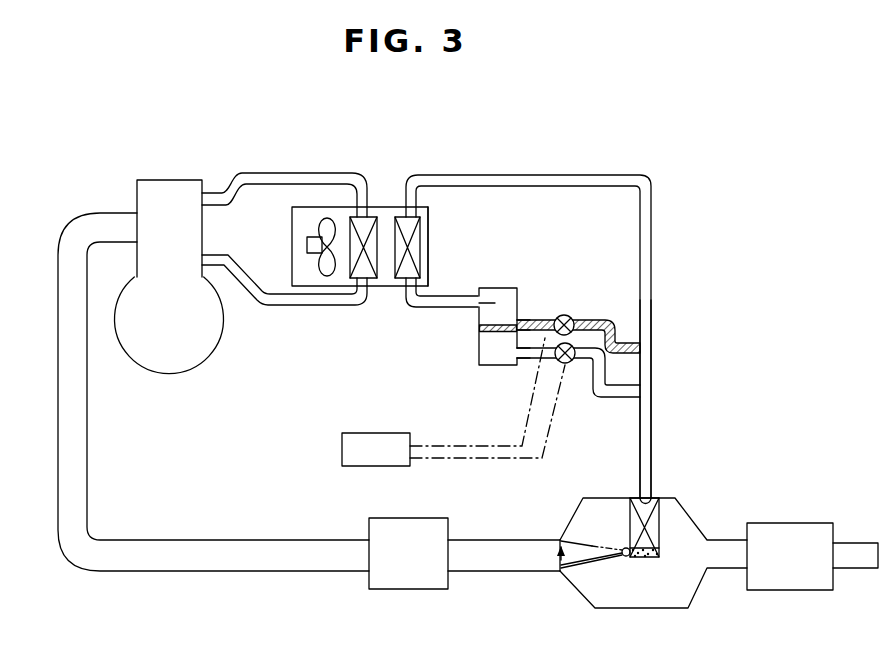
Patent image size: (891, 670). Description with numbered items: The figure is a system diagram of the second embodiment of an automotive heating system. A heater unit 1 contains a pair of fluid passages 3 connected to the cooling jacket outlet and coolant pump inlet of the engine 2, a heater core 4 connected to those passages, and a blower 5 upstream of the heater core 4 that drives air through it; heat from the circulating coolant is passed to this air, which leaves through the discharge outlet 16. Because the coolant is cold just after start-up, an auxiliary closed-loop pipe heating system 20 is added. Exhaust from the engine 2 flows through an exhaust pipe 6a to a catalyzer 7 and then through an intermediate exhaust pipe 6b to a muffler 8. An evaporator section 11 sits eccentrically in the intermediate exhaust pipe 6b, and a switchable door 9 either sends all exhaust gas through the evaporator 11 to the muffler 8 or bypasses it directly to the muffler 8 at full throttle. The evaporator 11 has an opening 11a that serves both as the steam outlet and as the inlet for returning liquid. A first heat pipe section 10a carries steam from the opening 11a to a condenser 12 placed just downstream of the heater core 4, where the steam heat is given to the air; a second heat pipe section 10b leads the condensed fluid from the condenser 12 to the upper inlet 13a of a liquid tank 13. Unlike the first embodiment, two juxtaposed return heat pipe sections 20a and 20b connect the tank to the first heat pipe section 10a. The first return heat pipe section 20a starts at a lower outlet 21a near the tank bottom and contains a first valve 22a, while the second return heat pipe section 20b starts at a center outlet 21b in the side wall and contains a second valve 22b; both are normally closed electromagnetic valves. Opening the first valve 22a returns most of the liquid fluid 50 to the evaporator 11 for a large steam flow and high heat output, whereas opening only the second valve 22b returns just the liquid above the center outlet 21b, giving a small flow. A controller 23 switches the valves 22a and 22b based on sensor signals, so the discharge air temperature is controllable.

The heater unit 1 is at (322, 196).
The engine 2 is at (190, 366).
The fluid passages 3 is at (237, 176).
The heater core 4 is at (368, 212).
The blower 5 is at (326, 276).
The exhaust pipe 6a is at (88, 497).
The intermediate exhaust pipe 6b is at (505, 572).
The catalyzer 7 is at (431, 590).
The muffler 8 is at (797, 586).
The switchable door 9 is at (592, 573).
The first heat pipe section 10a is at (653, 228).
The second heat pipe section 10b is at (423, 311).
The evaporator section 11 is at (656, 522).
The opening 11a is at (649, 497).
The condenser 12 is at (413, 215).
The liquid tank 13 is at (476, 349).
The upper inlet 13a is at (478, 294).
The discharge outlet 16 is at (429, 240).
The closed-loop pipe heating system 20 is at (621, 173).
The first return heat pipe section 20a is at (605, 381).
The second return heat pipe section 20b is at (607, 322).
The lower outlet 21a is at (514, 360).
The center outlet 21b is at (514, 318).
The first valve 22a is at (569, 364).
The second valve 22b is at (573, 316).
The controller 23 is at (341, 455).
The liquid fluid 50 is at (492, 342).